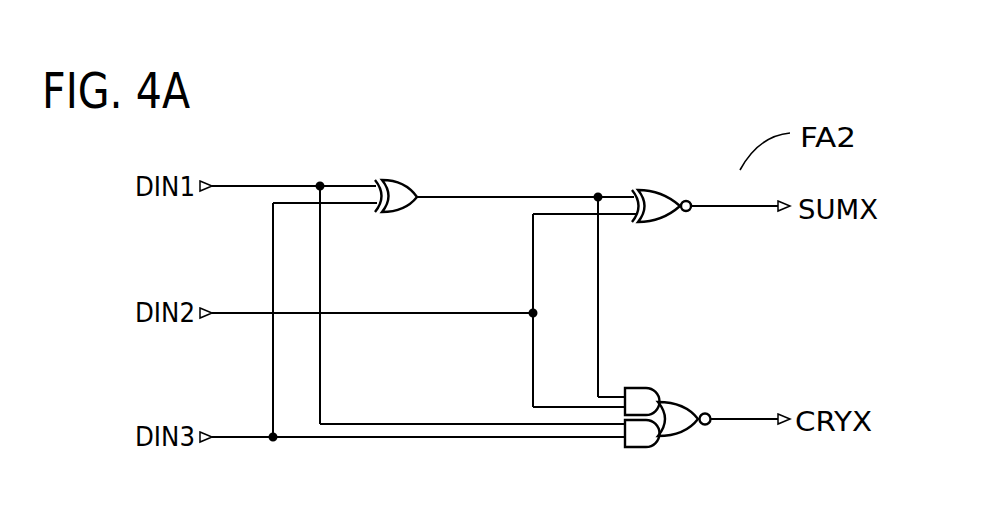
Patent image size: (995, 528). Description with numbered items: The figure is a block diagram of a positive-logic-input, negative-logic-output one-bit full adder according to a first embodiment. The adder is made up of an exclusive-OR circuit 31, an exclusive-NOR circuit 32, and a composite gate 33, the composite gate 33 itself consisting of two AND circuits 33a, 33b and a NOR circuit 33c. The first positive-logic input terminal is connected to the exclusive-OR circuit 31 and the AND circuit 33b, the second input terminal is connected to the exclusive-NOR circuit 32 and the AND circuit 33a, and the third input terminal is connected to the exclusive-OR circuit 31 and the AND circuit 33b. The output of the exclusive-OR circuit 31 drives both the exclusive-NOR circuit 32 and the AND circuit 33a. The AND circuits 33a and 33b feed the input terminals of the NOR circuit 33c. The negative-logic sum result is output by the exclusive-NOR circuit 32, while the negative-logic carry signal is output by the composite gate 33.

The exclusive-OR circuit 31 is at (393, 182).
The exclusive-NOR circuit 32 is at (645, 190).
The composite gate 33 is at (703, 416).
The AND circuit 33a is at (634, 388).
The AND circuit 33b is at (633, 448).
The NOR circuit 33c is at (677, 435).